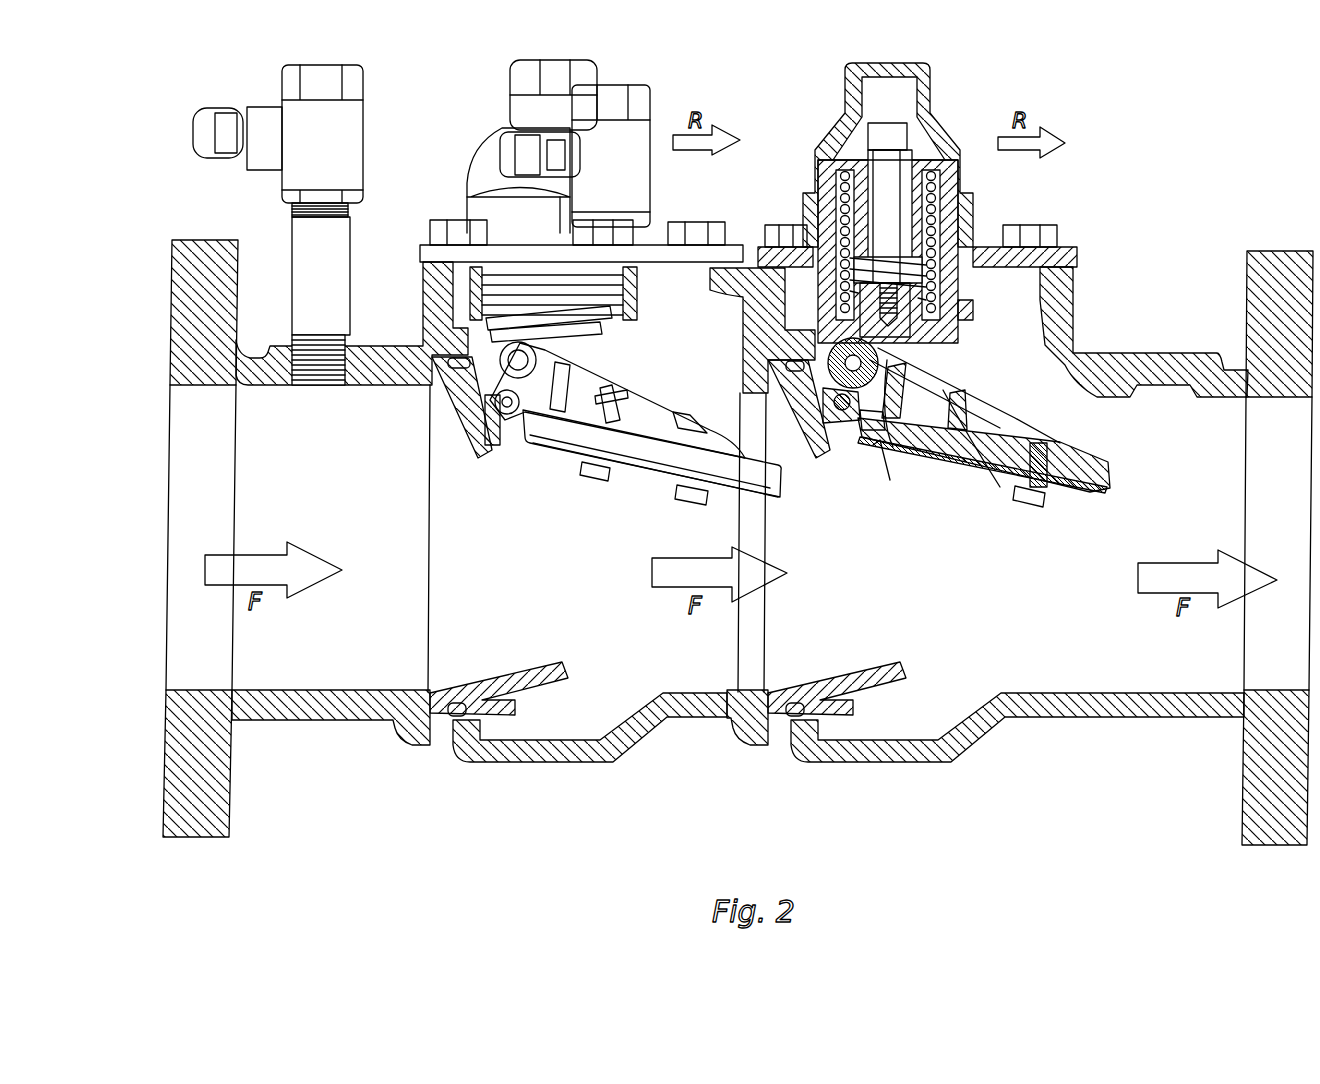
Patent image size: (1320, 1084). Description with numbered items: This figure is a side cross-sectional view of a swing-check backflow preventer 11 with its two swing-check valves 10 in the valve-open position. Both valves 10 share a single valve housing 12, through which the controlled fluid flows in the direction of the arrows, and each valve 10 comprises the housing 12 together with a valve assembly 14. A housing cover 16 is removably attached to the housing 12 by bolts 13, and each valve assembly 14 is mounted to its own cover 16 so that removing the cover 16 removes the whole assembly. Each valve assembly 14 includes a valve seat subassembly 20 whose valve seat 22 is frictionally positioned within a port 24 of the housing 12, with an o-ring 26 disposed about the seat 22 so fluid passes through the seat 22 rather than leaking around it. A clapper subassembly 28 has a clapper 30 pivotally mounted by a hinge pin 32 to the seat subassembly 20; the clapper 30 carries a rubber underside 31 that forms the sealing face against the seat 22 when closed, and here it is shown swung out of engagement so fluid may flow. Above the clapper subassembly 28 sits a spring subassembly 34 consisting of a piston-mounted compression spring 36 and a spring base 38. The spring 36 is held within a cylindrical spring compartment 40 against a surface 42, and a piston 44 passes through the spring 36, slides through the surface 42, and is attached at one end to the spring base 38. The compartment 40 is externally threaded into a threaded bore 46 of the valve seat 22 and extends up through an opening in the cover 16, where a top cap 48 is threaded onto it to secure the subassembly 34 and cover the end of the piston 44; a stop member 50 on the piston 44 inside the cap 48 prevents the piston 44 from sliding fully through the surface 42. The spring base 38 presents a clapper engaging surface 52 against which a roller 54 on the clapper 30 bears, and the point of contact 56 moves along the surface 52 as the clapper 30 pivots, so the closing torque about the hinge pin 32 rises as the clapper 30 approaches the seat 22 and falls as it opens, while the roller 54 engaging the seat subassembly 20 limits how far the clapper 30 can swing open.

The swing-check valve 10 is at (445, 190).
The swing-check backflow preventer 11 is at (338, 778).
The valve housing 12 is at (1100, 325).
The bolts 13 is at (435, 228).
The valve assembly 14 is at (658, 368).
The housing cover 16 is at (440, 253).
The valve seat subassembly 20 is at (545, 712).
The valve seat 22 is at (470, 690).
The port 24 is at (410, 725).
The o-ring 26 is at (455, 370).
The clapper subassembly 28 is at (683, 393).
The clapper 30 is at (675, 416).
The rubber underside 31 is at (880, 460).
The hinge pin 32 is at (490, 442).
The spring subassembly 34 is at (630, 352).
The piston-mounted compression spring 36 is at (942, 215).
The spring base 38 is at (545, 352).
The spring compartment 40 is at (925, 135).
The surface 42 is at (930, 165).
The piston 44 is at (822, 200).
The threaded bore 46 is at (970, 300).
The top cap 48 is at (522, 120).
The stop member 50 is at (875, 135).
The clapper engaging surface 52 is at (975, 450).
The roller 54 is at (507, 415).
The point of contact 56 is at (600, 330).